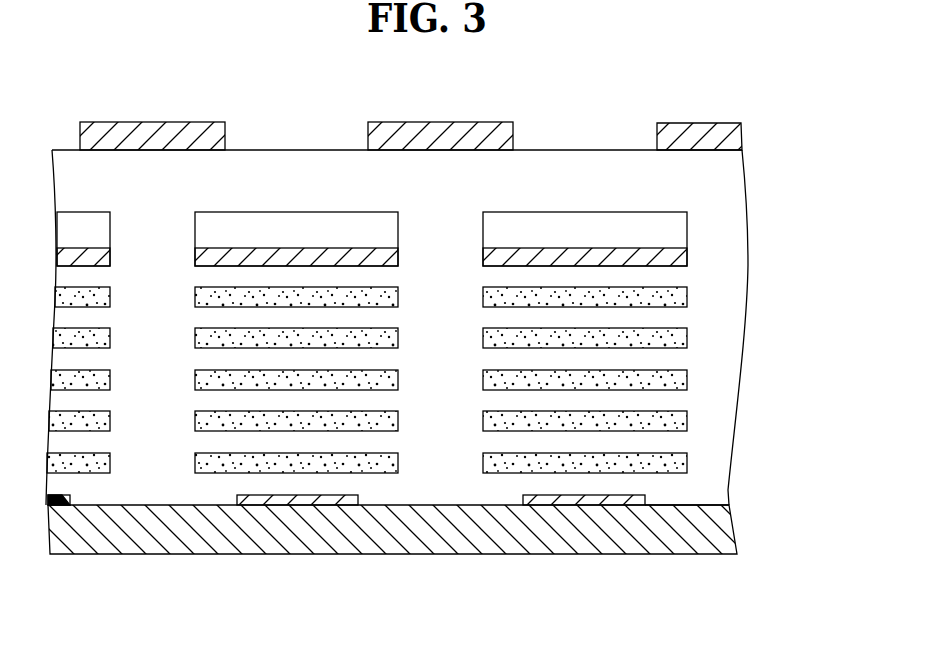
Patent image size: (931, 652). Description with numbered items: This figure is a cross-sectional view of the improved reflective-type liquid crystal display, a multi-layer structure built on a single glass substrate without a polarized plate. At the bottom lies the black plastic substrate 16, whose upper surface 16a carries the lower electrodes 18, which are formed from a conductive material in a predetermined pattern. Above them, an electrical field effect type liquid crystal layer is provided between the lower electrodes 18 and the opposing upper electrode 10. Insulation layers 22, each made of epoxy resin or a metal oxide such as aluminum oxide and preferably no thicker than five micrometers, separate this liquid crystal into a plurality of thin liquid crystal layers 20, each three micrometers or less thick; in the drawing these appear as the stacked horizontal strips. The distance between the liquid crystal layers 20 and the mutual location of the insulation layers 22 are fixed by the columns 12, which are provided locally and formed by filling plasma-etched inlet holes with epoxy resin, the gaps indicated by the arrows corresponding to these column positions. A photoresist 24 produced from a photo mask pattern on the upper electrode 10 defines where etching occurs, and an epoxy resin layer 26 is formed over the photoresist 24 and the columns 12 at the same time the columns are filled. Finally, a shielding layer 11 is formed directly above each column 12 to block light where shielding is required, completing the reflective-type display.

The upper electrode 10 is at (288, 260).
The shielding layer 11 is at (225, 122).
The column 12 is at (137, 192).
The black plastic substrate 16 is at (688, 548).
The upper surface of base substrate 16a is at (715, 512).
The lower electrode 18 is at (273, 505).
The liquid crystal layer 20 is at (675, 363).
The insulation layer 22 is at (687, 340).
The photoresist 24 is at (673, 233).
The epoxy resin layer 26 is at (730, 177).